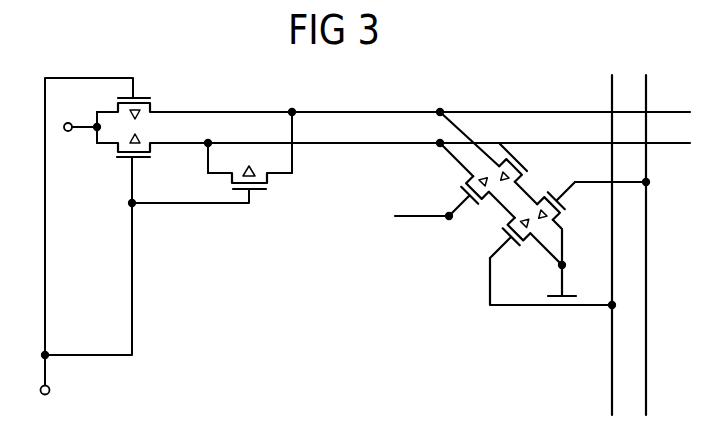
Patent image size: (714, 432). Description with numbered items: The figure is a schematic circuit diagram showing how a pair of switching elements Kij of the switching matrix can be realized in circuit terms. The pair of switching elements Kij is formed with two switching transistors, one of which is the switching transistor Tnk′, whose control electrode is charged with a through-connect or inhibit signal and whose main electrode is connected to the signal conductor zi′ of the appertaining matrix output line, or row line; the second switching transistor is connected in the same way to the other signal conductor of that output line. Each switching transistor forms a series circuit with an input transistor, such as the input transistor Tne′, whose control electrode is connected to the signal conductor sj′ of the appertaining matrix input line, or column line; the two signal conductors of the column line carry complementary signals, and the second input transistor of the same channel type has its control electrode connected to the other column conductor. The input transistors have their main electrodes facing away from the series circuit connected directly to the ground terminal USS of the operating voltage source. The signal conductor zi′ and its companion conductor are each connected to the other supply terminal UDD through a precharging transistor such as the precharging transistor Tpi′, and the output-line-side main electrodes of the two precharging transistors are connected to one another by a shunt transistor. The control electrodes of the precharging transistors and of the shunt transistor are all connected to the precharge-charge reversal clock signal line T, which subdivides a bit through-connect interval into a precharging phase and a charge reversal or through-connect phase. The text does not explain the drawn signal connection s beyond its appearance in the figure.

The precharging transistor Tpi′ is at (148, 91).
The switching transistor Tnk′ is at (539, 163).
The input transistor Tne′ is at (571, 202).
The signal conductor zi′ is at (425, 94).
The signal conductor sj′ is at (627, 245).
The input signal line s is at (415, 217).
The precharge-charge reversal clock signal line T is at (52, 383).
The terminal of the operating voltage source UDD is at (77, 148).
The terminal of the operating voltage source USS is at (576, 282).
The pair of switching elements Kij is at (420, 303).